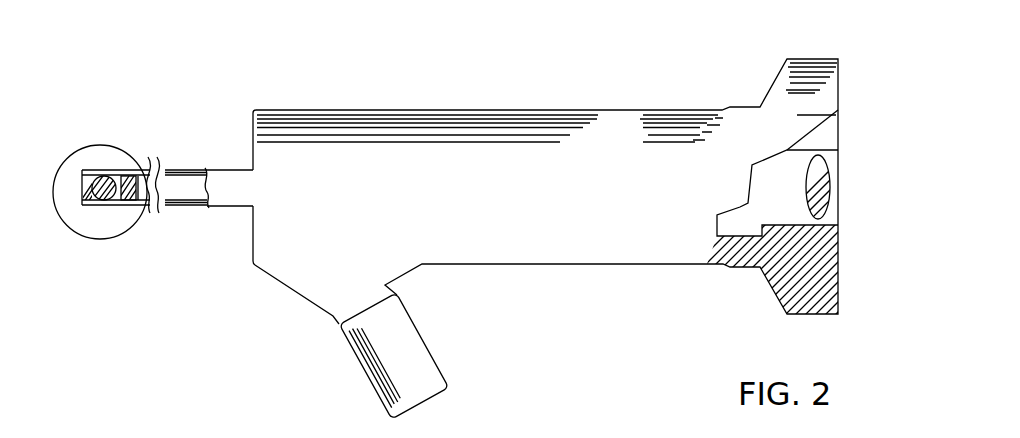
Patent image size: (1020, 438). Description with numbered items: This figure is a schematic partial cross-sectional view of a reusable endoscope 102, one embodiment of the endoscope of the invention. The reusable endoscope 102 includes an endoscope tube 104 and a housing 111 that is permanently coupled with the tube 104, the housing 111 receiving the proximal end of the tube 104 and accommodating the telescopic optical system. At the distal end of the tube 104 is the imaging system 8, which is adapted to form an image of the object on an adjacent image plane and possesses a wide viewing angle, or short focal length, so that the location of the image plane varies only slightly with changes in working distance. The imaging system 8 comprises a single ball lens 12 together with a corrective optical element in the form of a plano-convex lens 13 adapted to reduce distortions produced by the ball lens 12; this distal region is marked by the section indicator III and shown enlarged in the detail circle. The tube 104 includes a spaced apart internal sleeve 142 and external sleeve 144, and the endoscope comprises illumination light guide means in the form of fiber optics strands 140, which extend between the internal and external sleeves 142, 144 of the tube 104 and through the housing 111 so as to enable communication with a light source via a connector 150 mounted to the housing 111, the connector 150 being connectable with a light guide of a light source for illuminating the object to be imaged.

The imaging system 8 is at (133, 208).
The ball lens 12 is at (103, 172).
The plano-convex lens 13 is at (137, 172).
The reusable endoscope 102 is at (428, 82).
The endoscope tube 104 is at (225, 205).
The housing 111 is at (592, 110).
The fiber optics strands 140 is at (189, 170).
The internal sleeve 142 is at (197, 170).
The external sleeve 144 is at (168, 170).
The connector 150 is at (432, 348).
The section indicator III is at (110, 148).